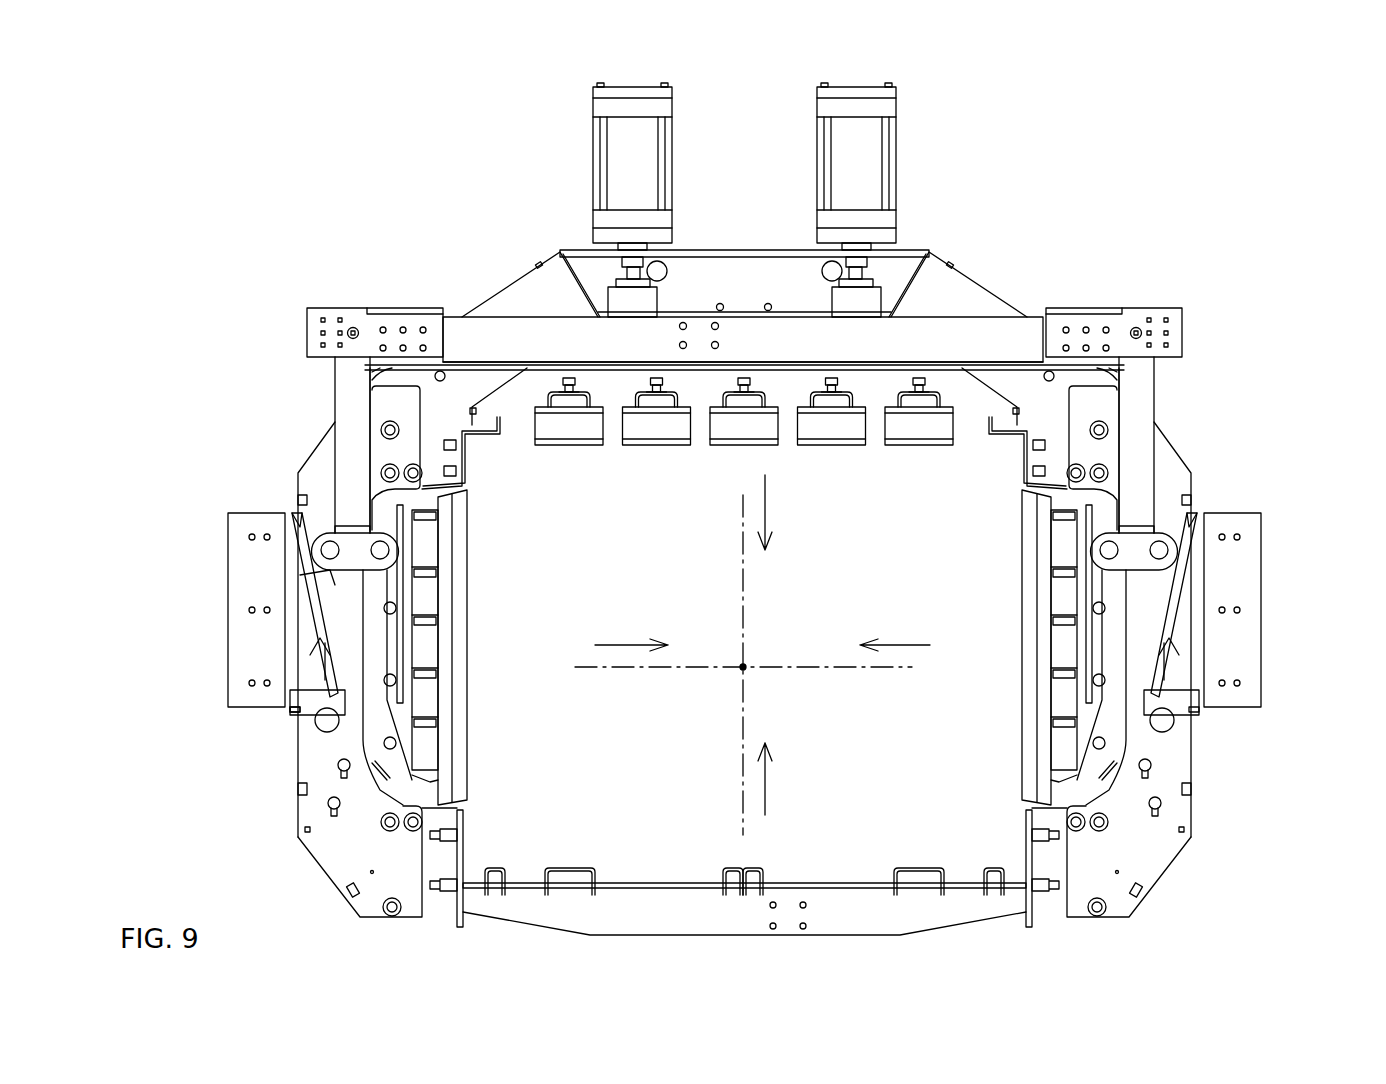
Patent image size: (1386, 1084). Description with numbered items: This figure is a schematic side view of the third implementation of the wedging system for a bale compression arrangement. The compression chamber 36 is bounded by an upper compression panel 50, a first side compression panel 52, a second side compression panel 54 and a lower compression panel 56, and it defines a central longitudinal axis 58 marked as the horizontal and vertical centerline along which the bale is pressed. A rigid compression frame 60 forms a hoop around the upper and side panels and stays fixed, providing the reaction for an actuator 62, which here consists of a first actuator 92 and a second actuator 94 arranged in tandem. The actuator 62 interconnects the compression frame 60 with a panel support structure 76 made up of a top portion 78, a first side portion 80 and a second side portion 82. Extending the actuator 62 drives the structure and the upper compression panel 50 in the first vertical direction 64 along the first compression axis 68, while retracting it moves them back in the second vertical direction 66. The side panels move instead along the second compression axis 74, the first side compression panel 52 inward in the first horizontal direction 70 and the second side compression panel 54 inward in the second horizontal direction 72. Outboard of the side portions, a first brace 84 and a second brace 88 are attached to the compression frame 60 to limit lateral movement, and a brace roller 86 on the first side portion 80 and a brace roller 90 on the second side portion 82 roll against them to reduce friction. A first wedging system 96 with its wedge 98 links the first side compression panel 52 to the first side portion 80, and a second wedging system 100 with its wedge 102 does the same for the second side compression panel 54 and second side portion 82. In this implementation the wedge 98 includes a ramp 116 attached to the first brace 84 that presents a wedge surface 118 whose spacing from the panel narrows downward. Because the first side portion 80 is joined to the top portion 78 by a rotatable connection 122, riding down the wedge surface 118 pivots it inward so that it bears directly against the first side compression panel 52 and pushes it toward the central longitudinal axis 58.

The compression chamber 36 is at (850, 822).
The upper compression panel 50 is at (720, 452).
The first side compression panel 52 is at (455, 718).
The second side compression panel 54 is at (1034, 726).
The lower compression panel 56 is at (568, 872).
The central longitudinal axis 58 is at (745, 665).
The compression frame 60 is at (720, 258).
The actuator 62 is at (744, 177).
The first vertical direction 64 is at (765, 505).
The second vertical direction 66 is at (765, 800).
The first compression axis 68 is at (741, 565).
The first horizontal direction 70 is at (607, 645).
The second horizontal direction 72 is at (895, 613).
The second compression axis 74 is at (850, 668).
The panel support structure 76 is at (744, 286).
The top portion 78 is at (972, 330).
The first side portion 80 is at (335, 398).
The second side portion 82 is at (1154, 398).
The first brace 84 is at (245, 588).
The brace roller 86 is at (318, 545).
The second brace 88 is at (1244, 588).
The brace roller 90 is at (1171, 545).
The first actuator 92 is at (628, 157).
The second actuator 94 is at (857, 153).
The first wedging system 96 is at (322, 628).
The wedge 98 is at (325, 718).
The second wedging system 100 is at (1167, 628).
The wedge 102 is at (1164, 718).
The ramp 116 is at (312, 703).
The wedge surface 118 is at (330, 580).
The rotatable connection 122 is at (353, 330).